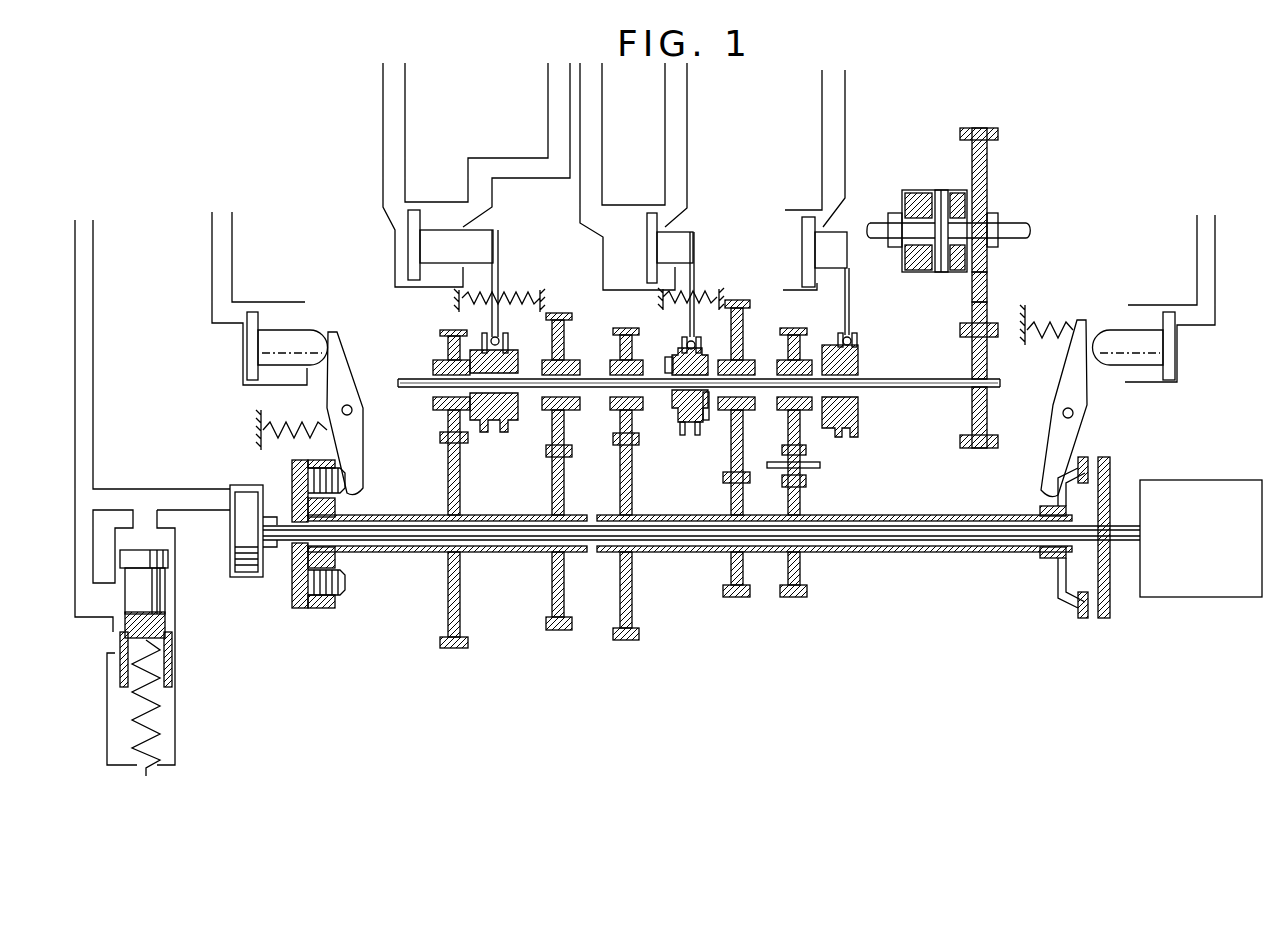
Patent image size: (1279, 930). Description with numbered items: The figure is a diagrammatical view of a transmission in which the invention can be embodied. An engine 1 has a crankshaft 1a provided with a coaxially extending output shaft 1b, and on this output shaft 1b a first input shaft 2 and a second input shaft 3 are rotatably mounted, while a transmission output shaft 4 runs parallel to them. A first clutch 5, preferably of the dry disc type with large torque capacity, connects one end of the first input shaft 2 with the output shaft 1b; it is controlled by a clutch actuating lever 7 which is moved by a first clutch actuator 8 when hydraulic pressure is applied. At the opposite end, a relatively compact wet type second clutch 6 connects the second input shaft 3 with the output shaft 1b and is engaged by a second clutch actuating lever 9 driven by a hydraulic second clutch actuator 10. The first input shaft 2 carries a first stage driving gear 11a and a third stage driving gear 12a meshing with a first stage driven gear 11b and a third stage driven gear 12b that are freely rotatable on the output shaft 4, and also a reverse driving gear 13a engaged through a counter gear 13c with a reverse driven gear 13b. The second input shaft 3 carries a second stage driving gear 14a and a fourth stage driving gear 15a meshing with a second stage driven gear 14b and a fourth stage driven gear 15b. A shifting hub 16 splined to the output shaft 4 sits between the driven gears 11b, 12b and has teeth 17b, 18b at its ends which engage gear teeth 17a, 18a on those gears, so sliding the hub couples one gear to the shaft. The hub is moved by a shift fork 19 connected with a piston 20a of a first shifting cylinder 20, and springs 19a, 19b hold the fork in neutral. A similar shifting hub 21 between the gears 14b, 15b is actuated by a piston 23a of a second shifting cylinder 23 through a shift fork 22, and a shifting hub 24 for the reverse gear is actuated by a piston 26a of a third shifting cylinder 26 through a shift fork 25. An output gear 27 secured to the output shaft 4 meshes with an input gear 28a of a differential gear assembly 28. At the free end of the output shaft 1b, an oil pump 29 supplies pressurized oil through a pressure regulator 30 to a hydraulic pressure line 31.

The engine 1 is at (1197, 583).
The crankshaft 1a is at (1118, 541).
The output shaft 1b is at (960, 540).
The first input shaft 2 is at (915, 553).
The second input shaft 3 is at (420, 555).
The transmission output shaft 4 is at (927, 379).
The first clutch 5 is at (1088, 622).
The second clutch 6 is at (347, 591).
The clutch actuating lever 7 is at (1076, 398).
The first clutch actuator 8 is at (1155, 304).
The second clutch actuating lever 9 is at (365, 445).
The second clutch actuator 10 is at (286, 302).
The first stage driving gear 11a is at (743, 597).
The first stage driven gear 11b is at (748, 420).
The third stage driving gear 12a is at (632, 602).
The third stage driven gear 12b is at (618, 425).
The reverse driving gear 13a is at (802, 597).
The reverse driven gear 13b is at (800, 327).
The counter gear 13c is at (812, 470).
The second stage driving gear 14a is at (564, 605).
The second stage driven gear 14b is at (550, 432).
The fourth stage driving gear 15a is at (460, 613).
The fourth stage driven gear 15b is at (445, 430).
The shifting hub 16 is at (703, 353).
The gear teeth 17a is at (710, 420).
The teeth 17b is at (688, 436).
The gear teeth 18a is at (636, 412).
The teeth 18b is at (672, 368).
The shift fork 19 is at (700, 280).
The spring 19a is at (703, 302).
The spring 19b is at (668, 297).
The first shifting cylinder 20 is at (627, 202).
The piston 20a is at (693, 233).
The shifting hub 21 is at (505, 355).
The shift fork 22 is at (500, 280).
The second shifting cylinder 23 is at (439, 202).
The piston 23a is at (498, 233).
The shifting hub 24 is at (855, 355).
The shift fork 25 is at (851, 303).
The third shifting cylinder 26 is at (800, 199).
The piston 26a is at (836, 240).
The output gear 27 is at (968, 418).
The differential gear assembly 28 is at (935, 192).
The input gear 28a is at (993, 295).
The oil pump 29 is at (250, 578).
The pressure regulator 30 is at (178, 612).
The hydraulic pressure line 31 is at (97, 402).